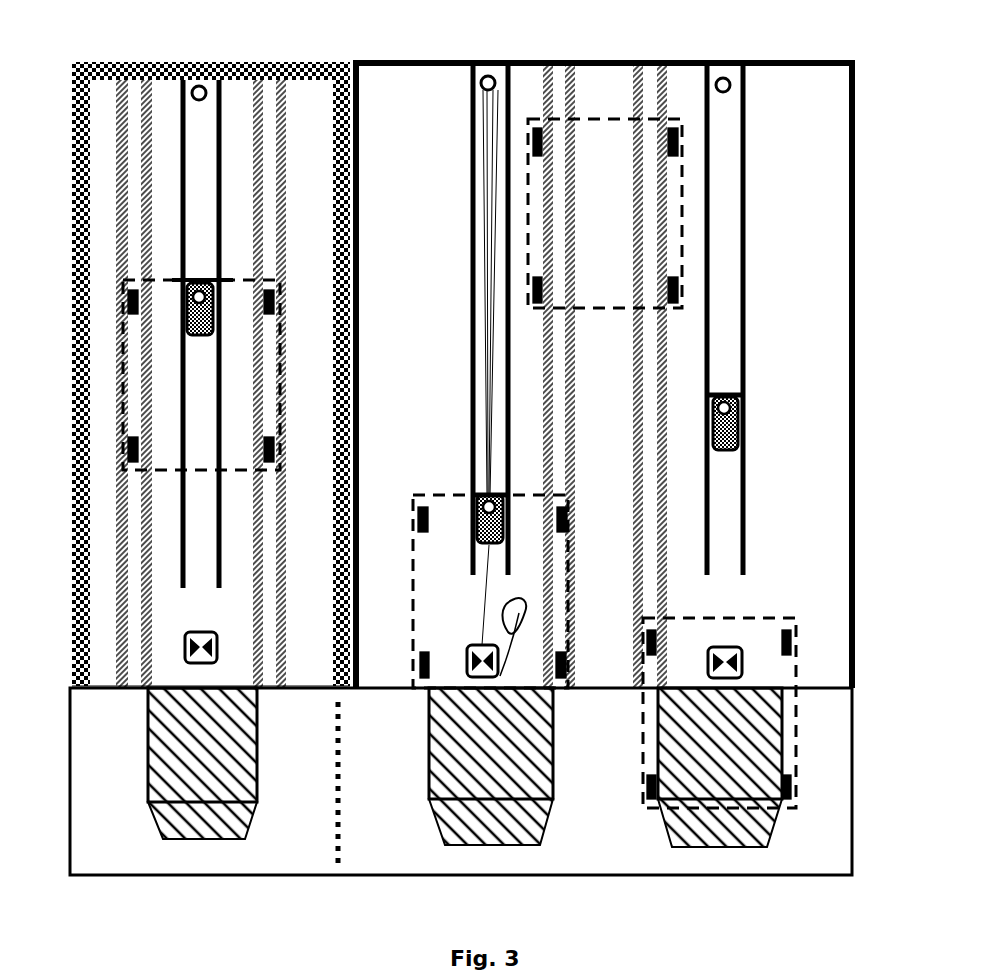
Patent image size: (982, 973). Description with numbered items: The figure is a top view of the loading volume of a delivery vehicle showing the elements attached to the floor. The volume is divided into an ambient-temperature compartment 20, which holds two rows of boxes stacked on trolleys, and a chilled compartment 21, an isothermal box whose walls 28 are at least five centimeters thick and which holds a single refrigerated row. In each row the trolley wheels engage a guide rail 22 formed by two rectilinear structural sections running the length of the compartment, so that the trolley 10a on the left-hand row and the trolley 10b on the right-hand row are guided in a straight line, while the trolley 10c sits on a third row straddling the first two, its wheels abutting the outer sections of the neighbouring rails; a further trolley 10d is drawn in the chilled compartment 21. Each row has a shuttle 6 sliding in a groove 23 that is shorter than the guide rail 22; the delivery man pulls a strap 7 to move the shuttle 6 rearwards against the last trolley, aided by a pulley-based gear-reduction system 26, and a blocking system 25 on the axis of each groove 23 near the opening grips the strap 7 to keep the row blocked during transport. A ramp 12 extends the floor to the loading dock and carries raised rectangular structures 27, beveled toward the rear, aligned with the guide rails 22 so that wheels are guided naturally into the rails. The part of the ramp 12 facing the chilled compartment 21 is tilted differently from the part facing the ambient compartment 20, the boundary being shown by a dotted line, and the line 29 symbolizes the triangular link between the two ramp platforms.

The shuttle 6 is at (504, 519).
The strap 7 is at (522, 617).
The trolley 10a is at (570, 570).
The trolley 10b is at (798, 710).
The trolley 10c is at (684, 272).
The transistor cell 10d is at (158, 278).
The ramp 12 is at (224, 874).
The ambient-temperature compartment 20 is at (98, 92).
The chilled compartment 21 is at (100, 150).
The guide rail 22 is at (266, 98).
The groove 23 is at (500, 214).
The blocking system 25 is at (182, 645).
The pulley-based gear-reduction system 26 is at (494, 76).
The rectangular structure 27 is at (166, 842).
The wall 28 is at (78, 675).
The link line 29 is at (338, 866).